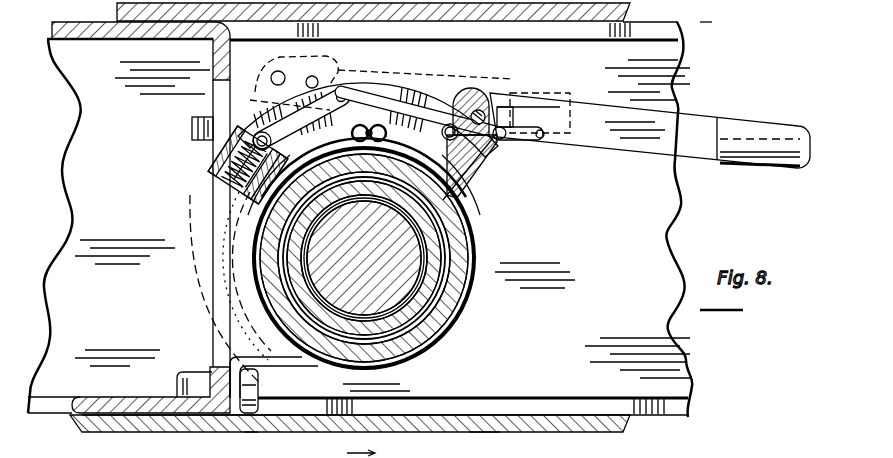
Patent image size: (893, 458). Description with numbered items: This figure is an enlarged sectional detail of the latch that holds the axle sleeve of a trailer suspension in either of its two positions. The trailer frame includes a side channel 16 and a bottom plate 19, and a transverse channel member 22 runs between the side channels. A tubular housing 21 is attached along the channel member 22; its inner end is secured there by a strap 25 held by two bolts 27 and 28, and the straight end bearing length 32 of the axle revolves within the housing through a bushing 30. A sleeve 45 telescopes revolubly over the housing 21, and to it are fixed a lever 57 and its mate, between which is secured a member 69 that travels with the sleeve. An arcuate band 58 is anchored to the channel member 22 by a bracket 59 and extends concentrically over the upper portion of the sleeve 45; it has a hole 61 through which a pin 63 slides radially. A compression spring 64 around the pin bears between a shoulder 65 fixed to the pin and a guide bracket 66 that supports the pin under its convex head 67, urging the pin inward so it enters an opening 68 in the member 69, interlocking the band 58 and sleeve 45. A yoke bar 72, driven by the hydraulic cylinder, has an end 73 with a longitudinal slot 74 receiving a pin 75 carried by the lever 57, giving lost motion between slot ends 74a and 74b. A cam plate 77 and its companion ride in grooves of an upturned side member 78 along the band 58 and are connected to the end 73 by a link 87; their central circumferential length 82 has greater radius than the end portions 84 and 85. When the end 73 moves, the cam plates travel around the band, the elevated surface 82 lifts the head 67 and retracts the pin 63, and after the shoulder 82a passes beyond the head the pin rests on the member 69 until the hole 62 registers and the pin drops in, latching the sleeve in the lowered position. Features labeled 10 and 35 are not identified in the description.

The direction arrow 10 is at (374, 450).
The side channel 16 is at (663, 214).
The bottom plate 19 is at (577, 433).
The tubular housing 21 is at (463, 310).
The transverse channel member 22 is at (213, 47).
The strap 25 is at (283, 362).
The bolt 27 is at (277, 430).
The bolt 28 is at (195, 118).
The bushing 30 is at (443, 333).
The straight end bearing length 32 is at (393, 270).
The housing member 35 is at (708, 11).
The sleeve 45 is at (407, 360).
The lever 57 is at (480, 157).
The arcuate band 58 is at (233, 233).
The bracket 59 is at (250, 444).
The hole 61 is at (385, 198).
The hole 62 is at (412, 115).
The pin 63 is at (217, 200).
The compression spring 64 is at (213, 172).
The shoulder 65 is at (217, 193).
The guide bracket 66 is at (233, 143).
The head 67 is at (217, 163).
The opening 68 is at (345, 207).
The member 69 is at (483, 220).
The yoke bar 72 is at (780, 133).
The end of yoke bar 73 is at (598, 133).
The slot 74 is at (510, 120).
The end of slot 74a is at (540, 110).
The end of slot 74b is at (497, 103).
The pin 75 is at (495, 115).
The cam plate 77 is at (305, 118).
The upturned side member 78 is at (282, 124).
The central circumferential length 82 is at (350, 85).
The shoulder 82a is at (385, 108).
The end portion 84 is at (445, 97).
The end portion 85 is at (485, 445).
The link 87 is at (500, 133).